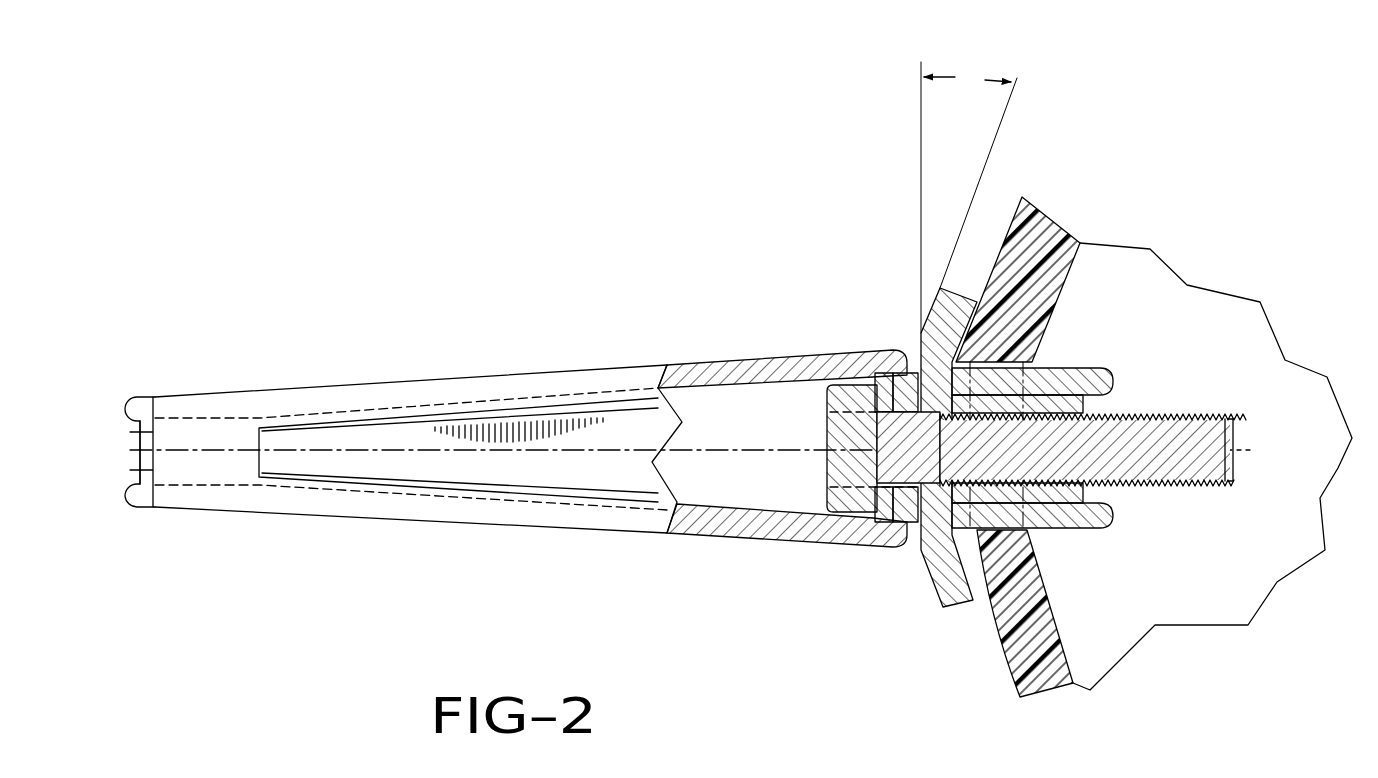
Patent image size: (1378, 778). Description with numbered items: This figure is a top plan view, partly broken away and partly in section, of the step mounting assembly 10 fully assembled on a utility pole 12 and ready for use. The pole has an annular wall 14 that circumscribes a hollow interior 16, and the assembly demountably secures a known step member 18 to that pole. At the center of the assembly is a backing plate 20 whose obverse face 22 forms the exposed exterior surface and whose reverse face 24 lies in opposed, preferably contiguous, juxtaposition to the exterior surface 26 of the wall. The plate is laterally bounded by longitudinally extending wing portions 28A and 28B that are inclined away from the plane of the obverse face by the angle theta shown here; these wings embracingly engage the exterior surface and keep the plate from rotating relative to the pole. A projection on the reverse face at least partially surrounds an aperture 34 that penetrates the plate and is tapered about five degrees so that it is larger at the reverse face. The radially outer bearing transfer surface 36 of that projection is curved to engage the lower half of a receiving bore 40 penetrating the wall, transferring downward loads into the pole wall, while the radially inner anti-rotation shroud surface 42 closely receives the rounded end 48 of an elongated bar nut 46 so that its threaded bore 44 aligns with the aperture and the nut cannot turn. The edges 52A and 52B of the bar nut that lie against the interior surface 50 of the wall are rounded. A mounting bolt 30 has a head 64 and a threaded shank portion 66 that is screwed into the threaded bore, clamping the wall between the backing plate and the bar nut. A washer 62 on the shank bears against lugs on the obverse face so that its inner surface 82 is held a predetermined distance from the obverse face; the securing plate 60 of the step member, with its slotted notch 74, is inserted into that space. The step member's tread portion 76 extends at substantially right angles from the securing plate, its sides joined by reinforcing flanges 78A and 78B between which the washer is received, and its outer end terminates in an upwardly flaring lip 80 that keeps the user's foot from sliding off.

The step mounting assembly 10 is at (912, 665).
The utility pole 12 is at (1174, 257).
The annular wall 14 is at (1040, 227).
The hollow interior 16 is at (1242, 354).
The step member 18 is at (426, 386).
The backing plate 20 is at (936, 604).
The obverse face 22 is at (913, 547).
The reverse face 24 is at (985, 303).
The exterior surface 26 is at (1012, 697).
The wing portion 28A is at (957, 305).
The wing portion 28B is at (955, 585).
The mounting bolt 30 is at (1238, 430).
The aperture 34 is at (920, 430).
The bearing transfer surface 36 is at (1095, 528).
The receiving bore 40 is at (1030, 362).
The anti-rotation shroud surface 42 is at (1122, 396).
The threaded bore 44 is at (1050, 425).
The elongated bar nut 46 is at (1085, 492).
The rounded end 48 is at (1003, 522).
The interior surface 50 is at (1062, 258).
The edge 52A is at (1040, 307).
The edge 52B is at (1040, 590).
The securing plate 60 is at (880, 545).
The washer 62 is at (828, 552).
The head 64 is at (842, 468).
The threaded shank portion 66 is at (1200, 470).
The slotted notch 74 is at (915, 400).
The tread portion 76 is at (222, 468).
The reinforcing flange 78A is at (687, 377).
The reinforcing flange 78B is at (688, 512).
The upwardly flaring lip 80 is at (147, 442).
The inner surface 82 is at (884, 373).